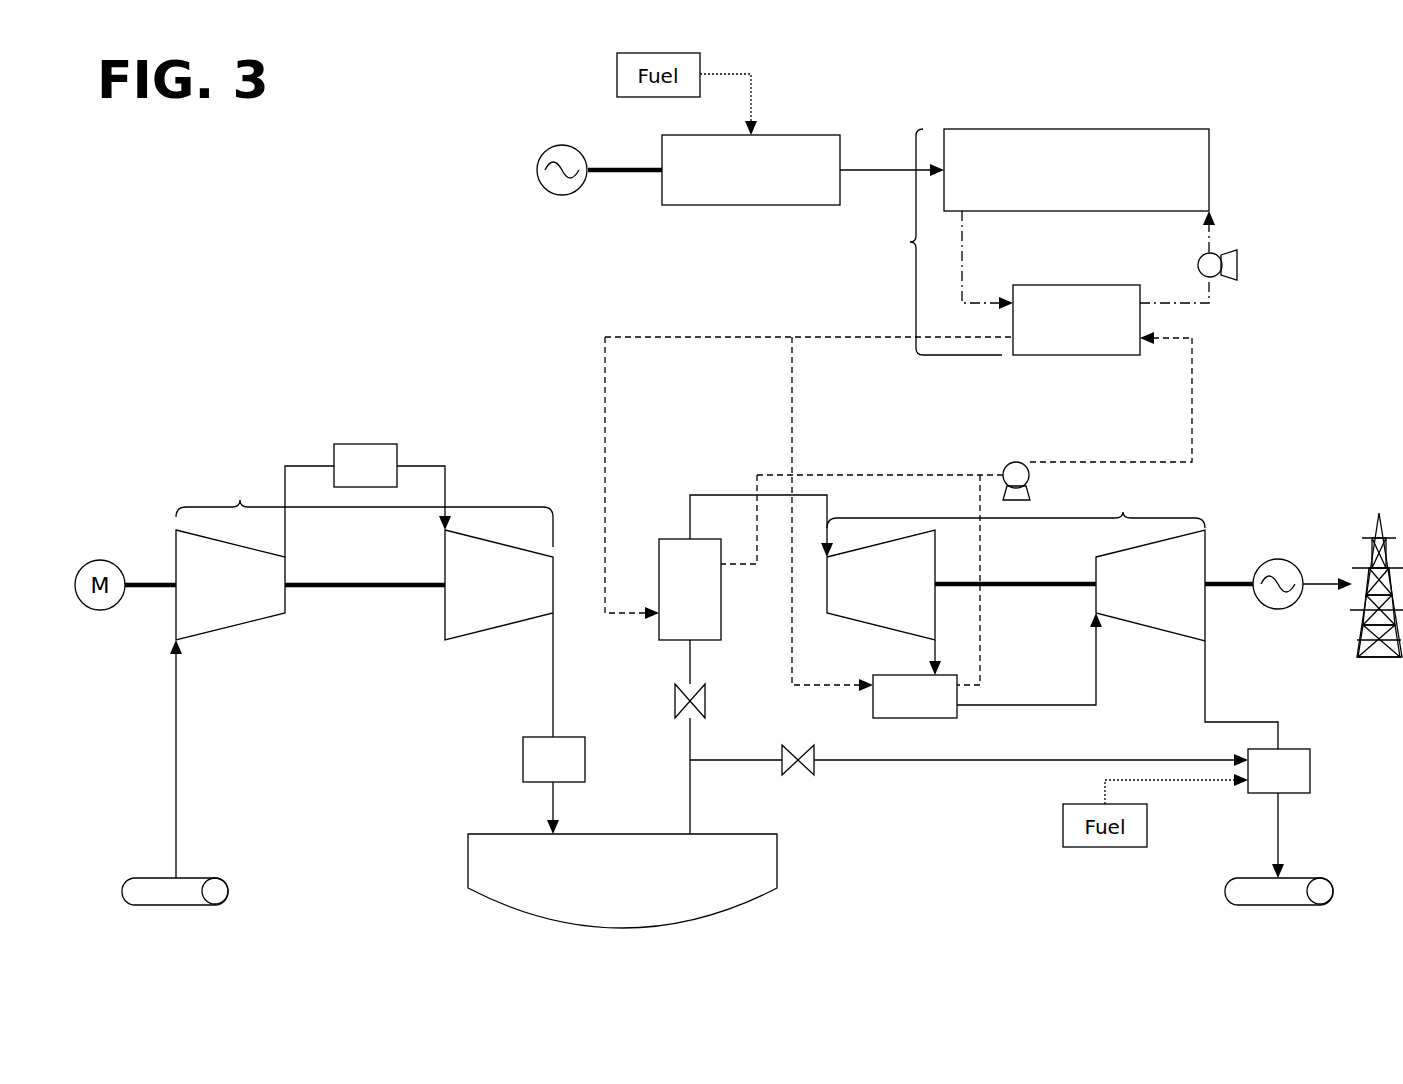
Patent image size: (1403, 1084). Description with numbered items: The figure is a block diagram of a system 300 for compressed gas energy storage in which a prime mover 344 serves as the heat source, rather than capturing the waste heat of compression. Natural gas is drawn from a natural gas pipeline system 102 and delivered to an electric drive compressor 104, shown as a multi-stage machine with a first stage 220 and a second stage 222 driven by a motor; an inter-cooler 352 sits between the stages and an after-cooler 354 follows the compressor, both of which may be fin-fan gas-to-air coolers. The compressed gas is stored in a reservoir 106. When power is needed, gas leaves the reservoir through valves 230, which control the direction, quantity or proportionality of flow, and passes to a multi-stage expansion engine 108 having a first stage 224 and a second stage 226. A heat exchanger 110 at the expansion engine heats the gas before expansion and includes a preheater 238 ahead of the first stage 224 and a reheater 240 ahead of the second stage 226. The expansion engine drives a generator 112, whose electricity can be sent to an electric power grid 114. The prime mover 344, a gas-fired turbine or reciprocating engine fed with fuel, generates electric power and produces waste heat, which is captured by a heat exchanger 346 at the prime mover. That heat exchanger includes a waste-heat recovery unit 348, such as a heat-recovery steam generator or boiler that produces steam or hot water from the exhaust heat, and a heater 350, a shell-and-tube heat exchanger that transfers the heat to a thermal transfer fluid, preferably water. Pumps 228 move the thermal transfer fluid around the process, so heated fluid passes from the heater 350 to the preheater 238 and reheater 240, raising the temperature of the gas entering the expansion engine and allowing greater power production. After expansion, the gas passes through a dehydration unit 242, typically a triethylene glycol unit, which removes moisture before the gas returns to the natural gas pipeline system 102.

The system 300 is at (322, 232).
The natural gas pipeline system 102 is at (208, 878).
The compressor 104 is at (364, 512).
The reservoir 106 is at (622, 881).
The expansion engine 108 is at (1016, 507).
The heat exchanger at the expansion engine 110 is at (667, 539).
The generator 112 is at (1290, 564).
The electric power grid 114 is at (1379, 513).
The first stage 220 is at (230, 585).
The second stage 222 is at (499, 585).
The first stage 224 is at (881, 585).
The second stage 226 is at (1150, 585).
The pump 228 is at (1229, 252).
The valve 230 is at (702, 688).
The preheater 238 is at (690, 589).
The reheater 240 is at (915, 696).
The dehydration unit 242 is at (1279, 771).
The prime mover 344 is at (751, 170).
The heat exchanger at the prime mover 346 is at (934, 242).
The waste-heat recovery unit 348 is at (1076, 170).
The heater 350 is at (1076, 320).
The inter-cooler 352 is at (365, 465).
The after-cooler 354 is at (548, 148).